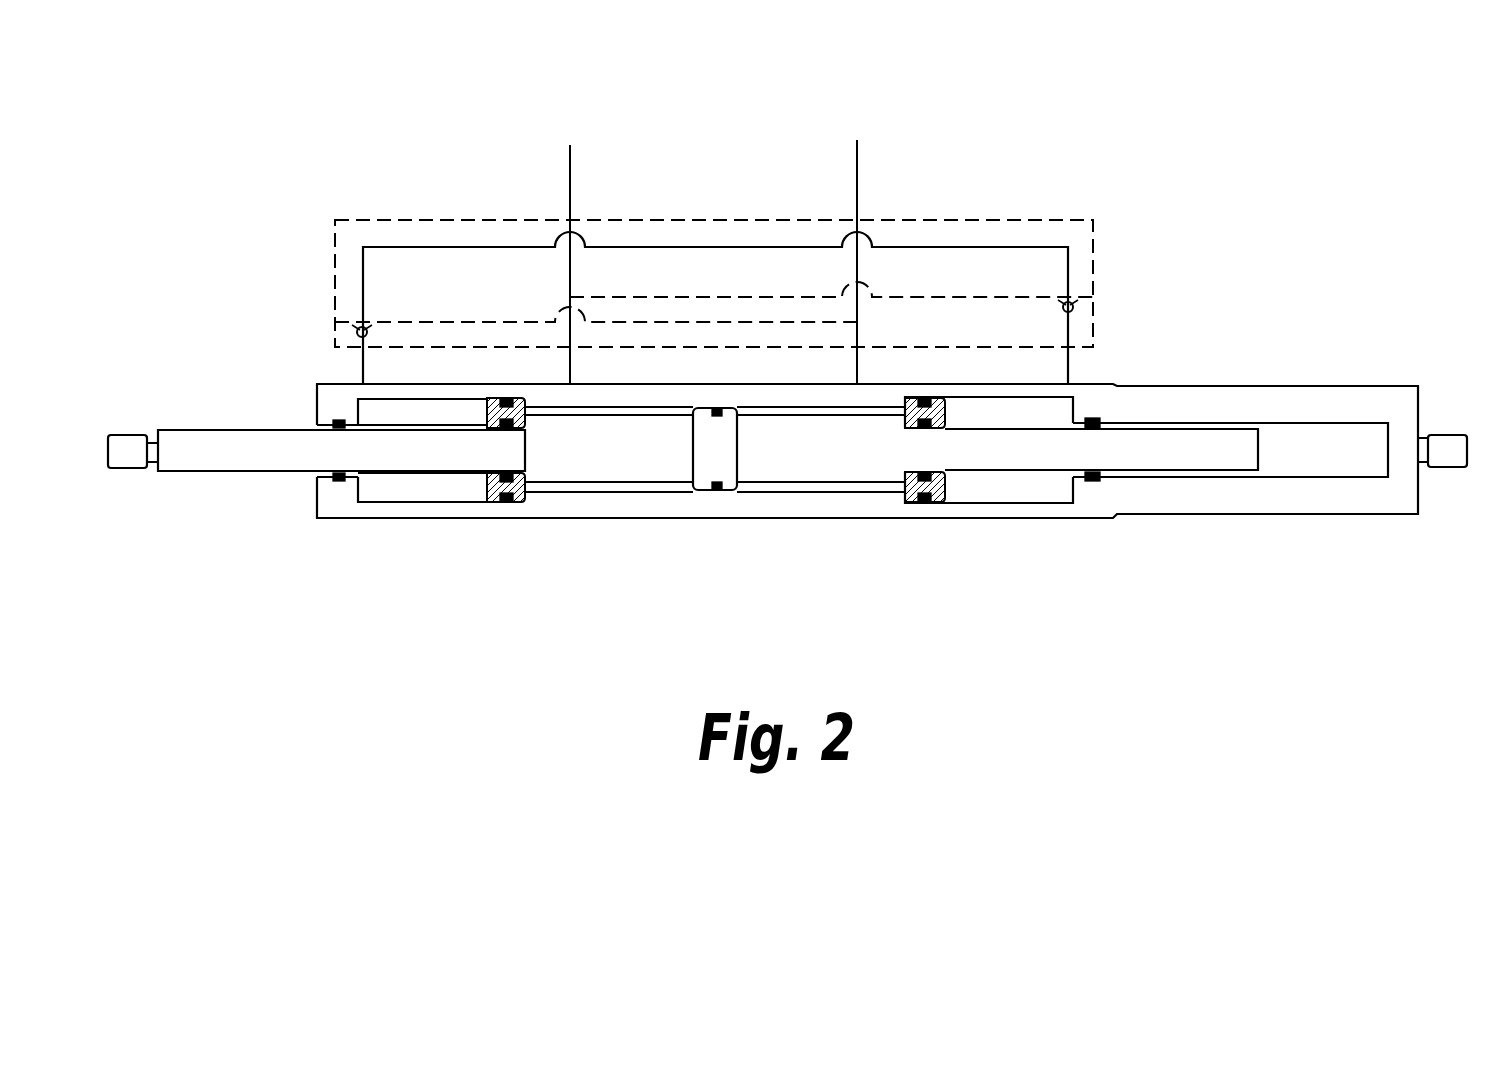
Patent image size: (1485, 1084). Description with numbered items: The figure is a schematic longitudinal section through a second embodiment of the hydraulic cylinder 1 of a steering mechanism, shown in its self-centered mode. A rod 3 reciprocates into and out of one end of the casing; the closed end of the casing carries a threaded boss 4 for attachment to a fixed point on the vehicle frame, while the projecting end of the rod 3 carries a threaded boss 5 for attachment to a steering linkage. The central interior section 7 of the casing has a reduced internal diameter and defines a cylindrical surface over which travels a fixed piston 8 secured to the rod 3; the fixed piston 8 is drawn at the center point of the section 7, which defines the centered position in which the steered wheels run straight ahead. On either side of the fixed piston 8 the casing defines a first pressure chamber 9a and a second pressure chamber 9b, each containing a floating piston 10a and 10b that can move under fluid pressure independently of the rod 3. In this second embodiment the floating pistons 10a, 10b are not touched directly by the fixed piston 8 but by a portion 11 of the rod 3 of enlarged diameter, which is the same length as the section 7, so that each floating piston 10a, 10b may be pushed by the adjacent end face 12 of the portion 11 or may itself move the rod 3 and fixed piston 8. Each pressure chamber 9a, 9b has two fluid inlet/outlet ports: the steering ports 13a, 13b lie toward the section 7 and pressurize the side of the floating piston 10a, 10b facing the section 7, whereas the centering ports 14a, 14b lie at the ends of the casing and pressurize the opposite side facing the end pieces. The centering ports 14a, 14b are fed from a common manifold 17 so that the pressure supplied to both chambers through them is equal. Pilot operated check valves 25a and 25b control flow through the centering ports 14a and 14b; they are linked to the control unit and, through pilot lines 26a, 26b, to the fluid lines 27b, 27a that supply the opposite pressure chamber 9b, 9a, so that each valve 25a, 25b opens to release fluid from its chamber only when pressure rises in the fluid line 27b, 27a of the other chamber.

The hydraulic cylinder 1 is at (742, 537).
The rod 3 is at (228, 440).
The threaded boss 4 is at (1438, 435).
The threaded boss 5 is at (132, 458).
The central interior section 7 is at (787, 402).
The fixed piston 8 is at (722, 427).
The first pressure chamber 9a is at (407, 413).
The second pressure chamber 9b is at (1010, 413).
The floating piston 10a is at (523, 495).
The floating piston 10b is at (940, 495).
The enlarged diameter portion 11 is at (600, 458).
The end face 12 is at (525, 441).
The first inlet/outlet steering port 13a is at (580, 403).
The second inlet/outlet steering port 13b is at (860, 405).
The first inlet/outlet centering port 14a is at (363, 397).
The second inlet/outlet centering port 14b is at (1073, 395).
The common manifold 17 is at (653, 247).
The pilot operated check valve 25a is at (362, 326).
The pilot operated check valve 25b is at (1073, 307).
The pilot line 26a is at (510, 322).
The pilot line 26b is at (713, 297).
The fluid line 27a is at (570, 180).
The fluid line 27b is at (857, 186).